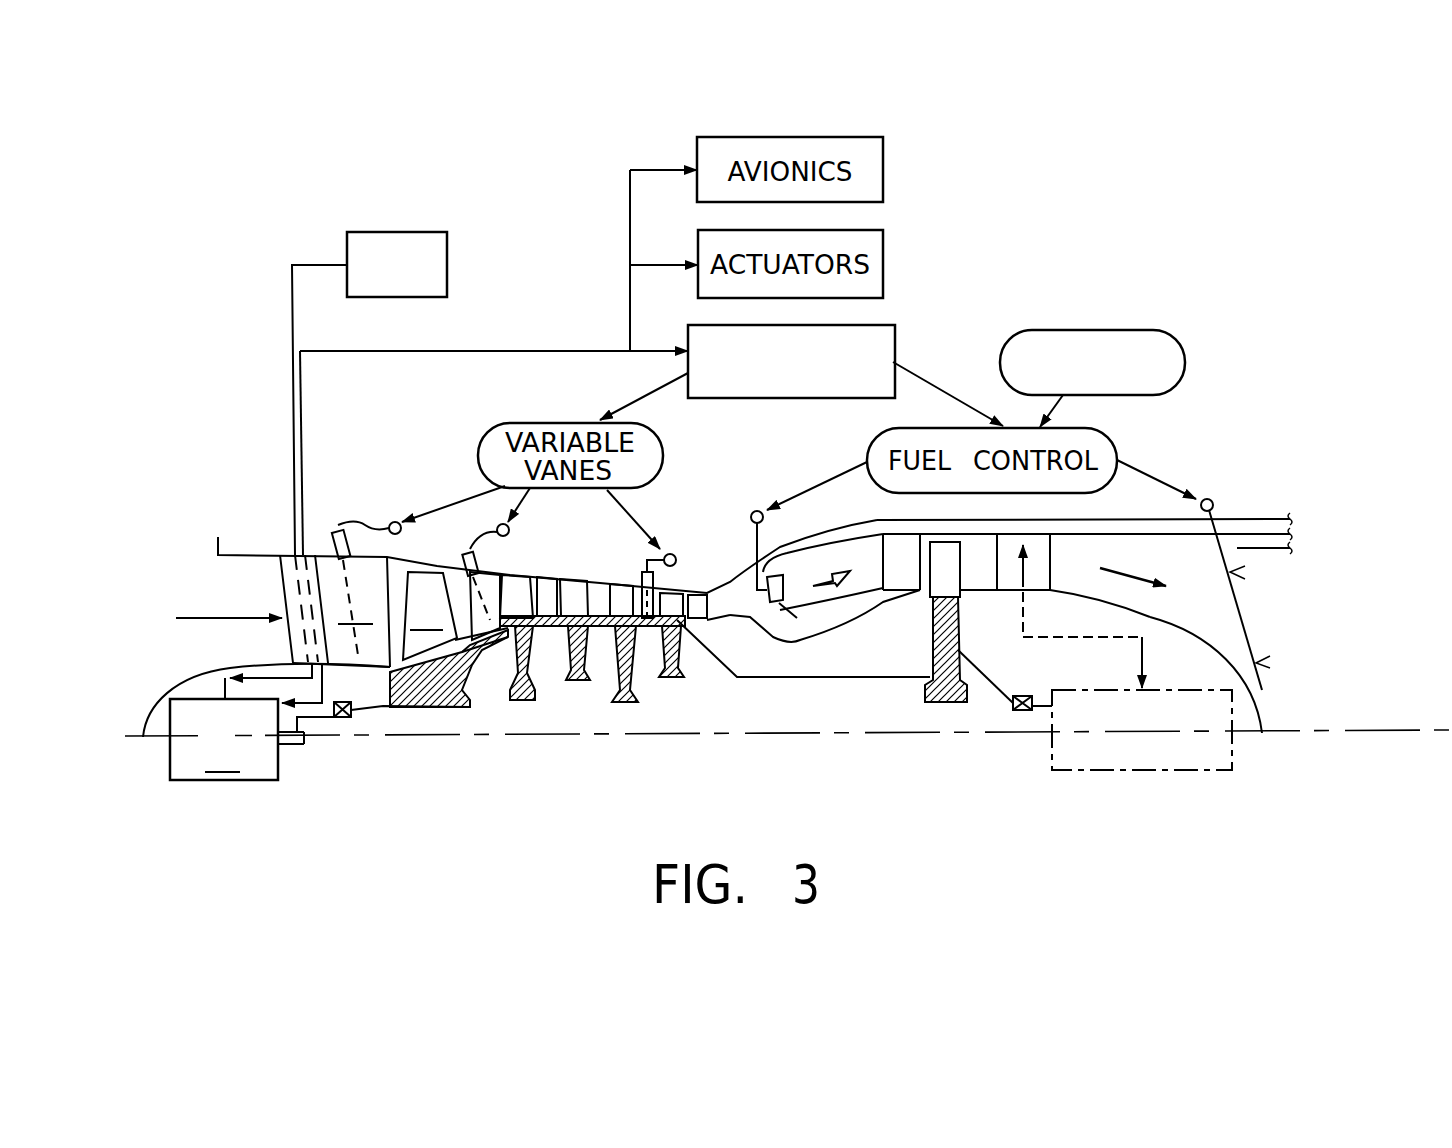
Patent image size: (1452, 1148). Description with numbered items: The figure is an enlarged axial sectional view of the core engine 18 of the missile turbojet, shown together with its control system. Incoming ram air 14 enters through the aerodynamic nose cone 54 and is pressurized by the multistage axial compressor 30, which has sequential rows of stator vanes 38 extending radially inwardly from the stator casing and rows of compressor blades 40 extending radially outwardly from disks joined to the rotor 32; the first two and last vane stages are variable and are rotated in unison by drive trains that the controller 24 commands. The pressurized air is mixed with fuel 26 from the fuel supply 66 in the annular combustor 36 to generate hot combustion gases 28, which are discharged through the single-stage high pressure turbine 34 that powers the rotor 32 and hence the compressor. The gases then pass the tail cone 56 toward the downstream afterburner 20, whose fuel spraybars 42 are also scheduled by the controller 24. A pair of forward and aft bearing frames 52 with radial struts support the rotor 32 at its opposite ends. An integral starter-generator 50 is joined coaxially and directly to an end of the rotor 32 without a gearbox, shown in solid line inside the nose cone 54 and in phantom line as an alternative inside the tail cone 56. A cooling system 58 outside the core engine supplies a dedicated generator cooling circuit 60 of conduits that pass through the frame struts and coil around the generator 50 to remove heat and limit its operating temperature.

The incoming air 14 is at (203, 618).
The core engine 18 is at (470, 730).
The afterburner 20 is at (1253, 516).
The electrical controller 24 is at (768, 400).
The fuel 26 is at (840, 473).
The hot combustion gases 28 is at (1128, 568).
The multistage axial compressor 30 is at (583, 572).
The rotor 32 is at (797, 677).
The high pressure turbine 34 is at (918, 598).
The annular combustor 36 is at (817, 547).
The stator vanes 38 is at (650, 607).
The compressor blades 40 is at (673, 597).
The fuel spraybars 42 is at (1246, 624).
The integral starter-generator 50 is at (1140, 772).
The bearing frames 52 is at (278, 580).
The nose cone 54 is at (198, 680).
The tail cone 56 is at (1205, 647).
The cooling system 58 is at (392, 232).
The generator cooling circuit 60 is at (292, 305).
The fuel supply 66 is at (1123, 328).